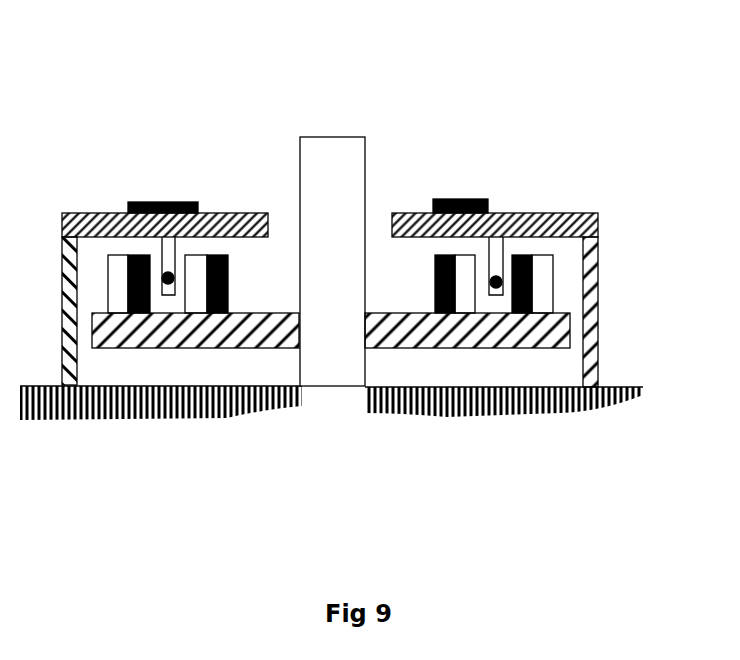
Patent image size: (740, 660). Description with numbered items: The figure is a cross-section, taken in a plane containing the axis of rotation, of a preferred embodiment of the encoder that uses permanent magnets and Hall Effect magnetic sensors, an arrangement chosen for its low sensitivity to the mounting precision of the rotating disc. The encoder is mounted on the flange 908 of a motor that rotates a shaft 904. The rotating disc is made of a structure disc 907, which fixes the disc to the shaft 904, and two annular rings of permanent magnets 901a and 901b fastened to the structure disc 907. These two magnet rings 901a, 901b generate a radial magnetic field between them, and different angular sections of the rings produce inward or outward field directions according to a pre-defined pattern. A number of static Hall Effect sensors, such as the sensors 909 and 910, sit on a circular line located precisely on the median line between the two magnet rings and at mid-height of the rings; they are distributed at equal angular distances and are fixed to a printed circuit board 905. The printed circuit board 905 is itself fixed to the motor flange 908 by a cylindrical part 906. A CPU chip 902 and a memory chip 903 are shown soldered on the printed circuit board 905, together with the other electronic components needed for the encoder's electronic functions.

The annular ring of permanent magnets 901a is at (115, 273).
The annular ring of permanent magnets 901b is at (200, 283).
The CPU chip 902 is at (160, 200).
The memory chip 903 is at (467, 198).
The shaft 904 is at (343, 163).
The printed circuit board 905 is at (545, 218).
The cylindrical part 906 is at (598, 285).
The structure disc 907 is at (507, 343).
The flange 908 is at (525, 398).
The Hall Effect sensor 909 is at (497, 277).
The Hall Effect sensor 910 is at (167, 272).